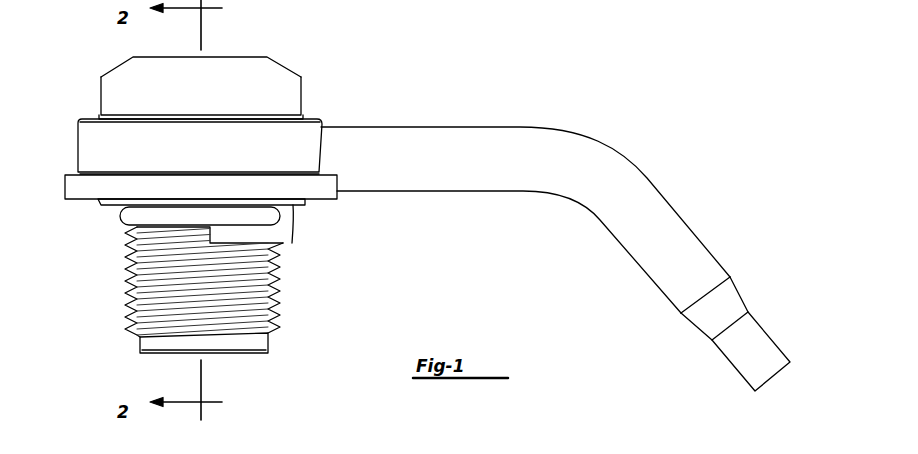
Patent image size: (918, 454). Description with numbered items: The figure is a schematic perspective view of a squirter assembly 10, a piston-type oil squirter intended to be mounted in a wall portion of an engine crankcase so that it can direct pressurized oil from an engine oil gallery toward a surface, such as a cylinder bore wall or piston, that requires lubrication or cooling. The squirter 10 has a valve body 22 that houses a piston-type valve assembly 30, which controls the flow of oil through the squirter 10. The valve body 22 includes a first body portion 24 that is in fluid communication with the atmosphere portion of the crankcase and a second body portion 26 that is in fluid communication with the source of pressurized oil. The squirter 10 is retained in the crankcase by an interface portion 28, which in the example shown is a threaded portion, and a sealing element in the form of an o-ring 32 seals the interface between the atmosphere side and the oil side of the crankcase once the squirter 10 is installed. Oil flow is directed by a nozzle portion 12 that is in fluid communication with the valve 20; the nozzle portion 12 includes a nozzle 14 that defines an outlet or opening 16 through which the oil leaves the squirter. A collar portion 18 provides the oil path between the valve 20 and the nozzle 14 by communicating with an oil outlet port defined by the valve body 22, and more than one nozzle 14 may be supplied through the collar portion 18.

The squirter assembly 10 is at (702, 77).
The nozzle portion 12 is at (338, 105).
The nozzle 14 is at (635, 167).
The opening 16 is at (775, 378).
The collar portion 18 is at (78, 150).
The valve 20 is at (255, 57).
The valve body 22 is at (101, 97).
The first body portion 24 is at (118, 207).
The second body portion 26 is at (138, 347).
The interface portion 28 is at (128, 270).
The piston-type valve assembly 30 is at (312, 297).
The o-ring 32 is at (280, 215).